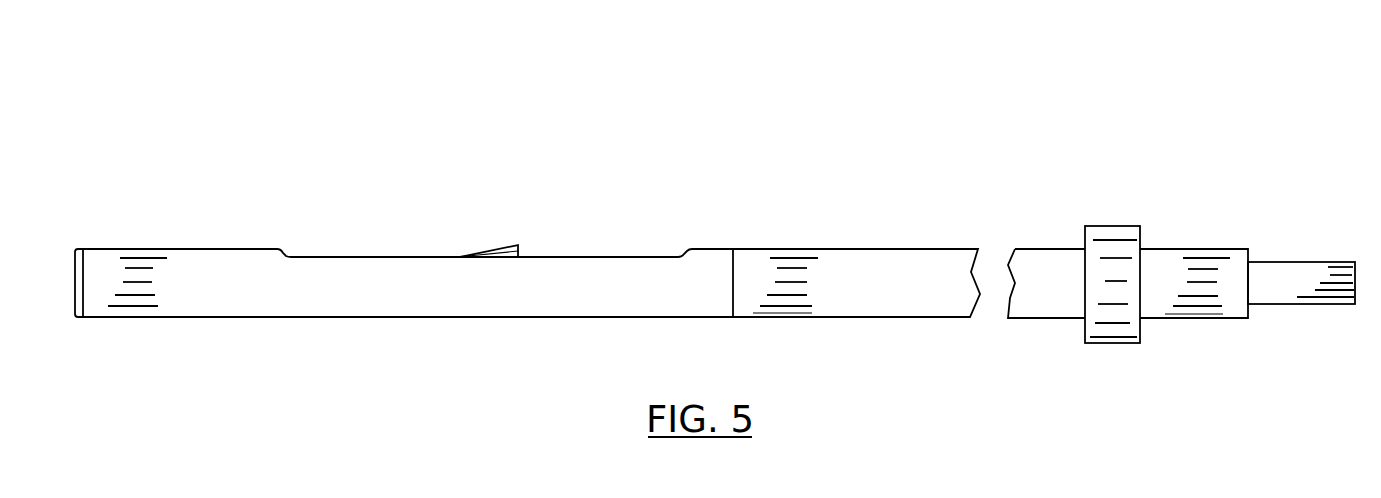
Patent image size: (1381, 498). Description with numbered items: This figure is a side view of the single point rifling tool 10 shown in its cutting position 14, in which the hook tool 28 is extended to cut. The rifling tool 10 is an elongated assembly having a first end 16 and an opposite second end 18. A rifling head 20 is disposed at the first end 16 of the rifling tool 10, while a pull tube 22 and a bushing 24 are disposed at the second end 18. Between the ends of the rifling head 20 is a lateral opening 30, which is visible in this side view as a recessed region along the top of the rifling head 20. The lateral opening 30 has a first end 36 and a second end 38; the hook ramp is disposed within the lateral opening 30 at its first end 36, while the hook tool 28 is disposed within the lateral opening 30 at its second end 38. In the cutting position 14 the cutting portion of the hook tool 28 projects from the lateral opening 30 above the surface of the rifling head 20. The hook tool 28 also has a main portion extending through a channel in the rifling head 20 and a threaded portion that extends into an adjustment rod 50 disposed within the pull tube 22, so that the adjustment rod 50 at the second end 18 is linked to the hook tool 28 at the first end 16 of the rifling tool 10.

The single point rifling tool 10 is at (530, 343).
The cutting position 14 is at (360, 135).
The first end 16 is at (77, 293).
The second end 18 is at (1355, 278).
The rifling head 20 is at (323, 290).
The pull tube 22 is at (908, 270).
The bushing 24 is at (1170, 265).
The hook tool 28 is at (503, 247).
The lateral opening 30 is at (421, 250).
The first end of the lateral opening 36 is at (290, 248).
The second end of the lateral opening 38 is at (678, 248).
The adjustment rod 50 is at (1283, 290).